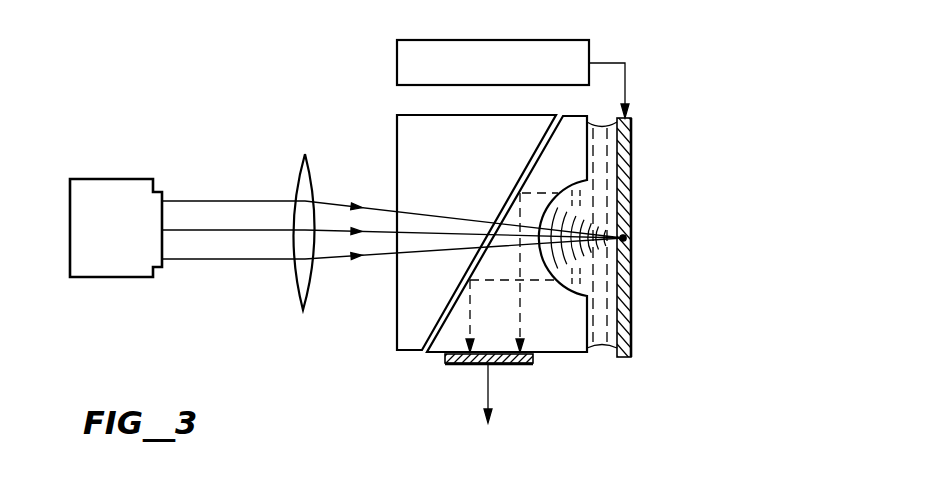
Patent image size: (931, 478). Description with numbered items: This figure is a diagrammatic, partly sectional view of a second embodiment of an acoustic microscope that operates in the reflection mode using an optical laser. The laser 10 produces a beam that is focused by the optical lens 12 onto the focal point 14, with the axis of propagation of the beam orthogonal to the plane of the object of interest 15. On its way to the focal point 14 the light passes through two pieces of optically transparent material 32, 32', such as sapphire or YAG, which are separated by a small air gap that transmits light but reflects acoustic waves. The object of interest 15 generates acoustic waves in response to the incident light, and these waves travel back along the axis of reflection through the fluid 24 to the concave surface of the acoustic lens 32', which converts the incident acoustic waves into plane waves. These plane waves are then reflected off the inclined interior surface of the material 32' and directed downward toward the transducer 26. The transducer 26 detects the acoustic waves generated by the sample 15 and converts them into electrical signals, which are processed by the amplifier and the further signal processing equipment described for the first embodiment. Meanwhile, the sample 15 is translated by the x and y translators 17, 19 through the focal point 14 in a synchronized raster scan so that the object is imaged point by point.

The laser 10 is at (108, 178).
The optical lens 12 is at (293, 284).
The focal point 14 is at (626, 235).
The object of interest 15 is at (629, 330).
The x translator 17 is at (471, 79).
The y translator 19 is at (397, 62).
The fluid 24 is at (599, 350).
The transducer 26 is at (450, 364).
The optically transparent material 32 is at (446, 233).
The acoustic lens 32' is at (516, 262).